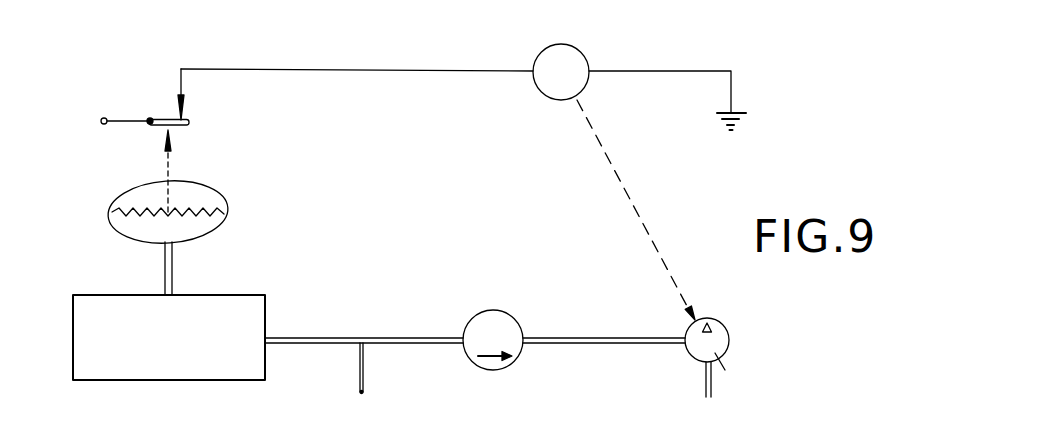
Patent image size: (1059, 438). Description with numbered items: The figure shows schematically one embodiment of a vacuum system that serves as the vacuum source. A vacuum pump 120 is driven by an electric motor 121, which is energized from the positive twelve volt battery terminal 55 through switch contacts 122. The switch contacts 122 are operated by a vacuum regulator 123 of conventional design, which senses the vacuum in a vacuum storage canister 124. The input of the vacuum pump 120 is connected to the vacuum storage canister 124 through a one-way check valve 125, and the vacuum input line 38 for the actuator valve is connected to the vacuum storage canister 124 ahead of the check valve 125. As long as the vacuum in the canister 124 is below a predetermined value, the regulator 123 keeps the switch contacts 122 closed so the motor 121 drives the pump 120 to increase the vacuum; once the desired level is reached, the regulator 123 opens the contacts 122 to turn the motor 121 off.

The battery terminal 55 is at (104, 117).
The switch contacts 122 is at (177, 119).
The vacuum regulator 123 is at (217, 193).
The vacuum storage canister 124 is at (217, 295).
The vacuum input line 38 is at (364, 378).
The one-way check valve 125 is at (503, 311).
The vacuum pump 120 is at (723, 320).
The electric motor 121 is at (568, 43).